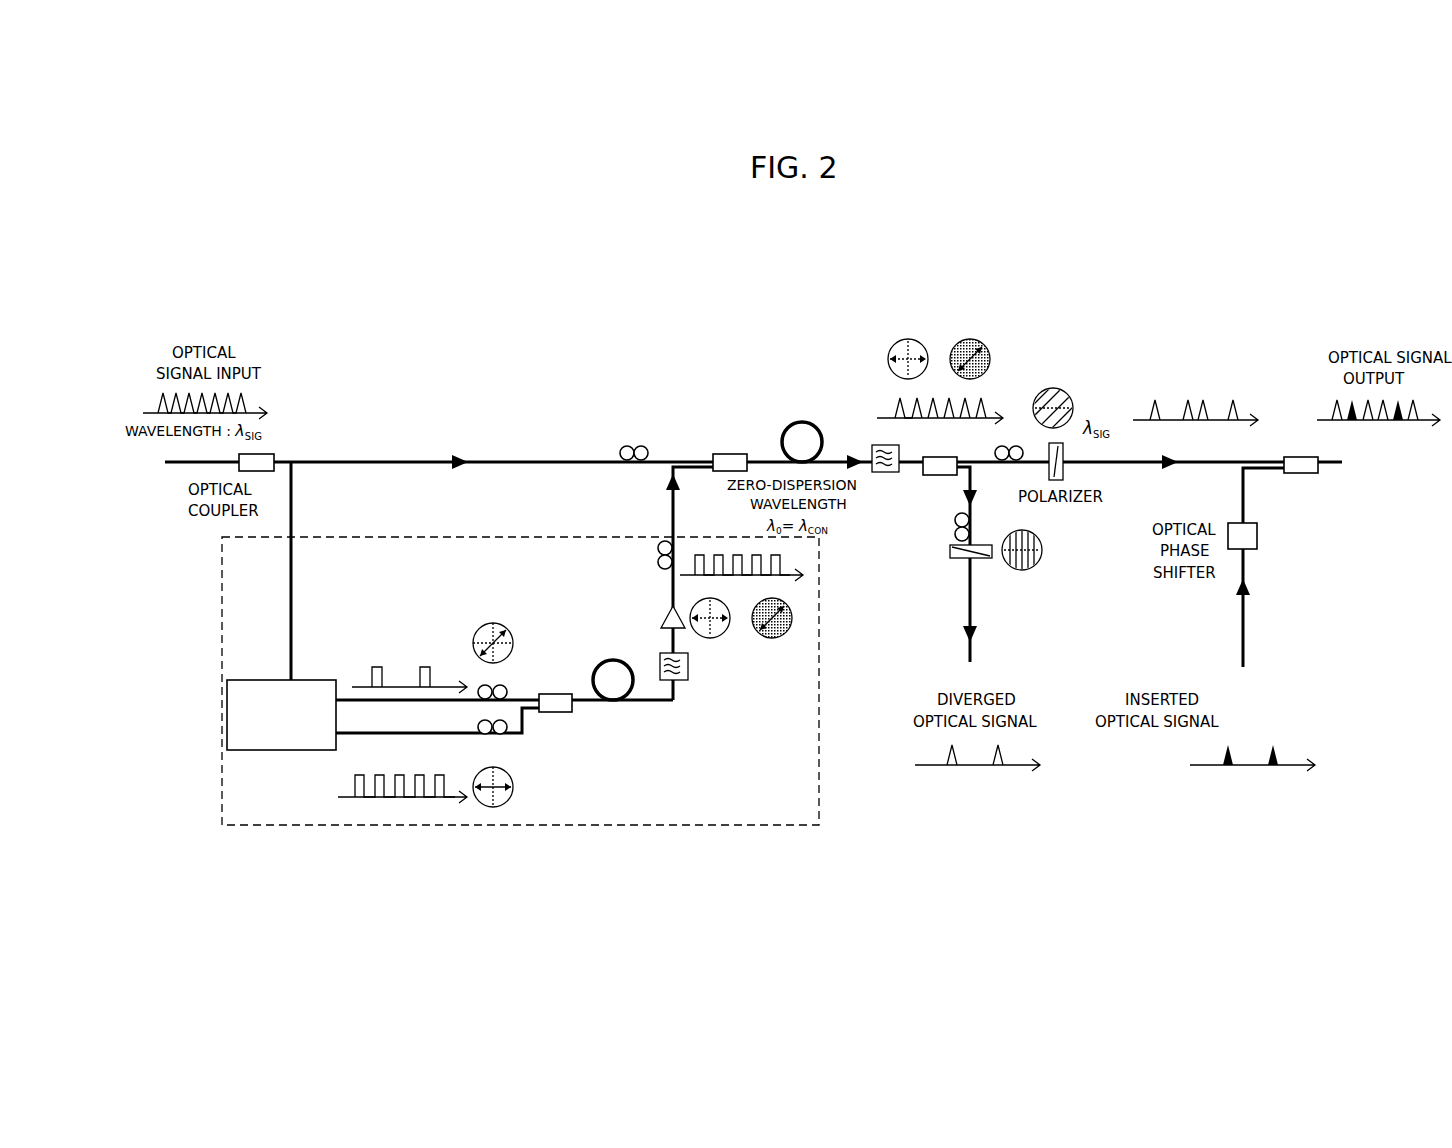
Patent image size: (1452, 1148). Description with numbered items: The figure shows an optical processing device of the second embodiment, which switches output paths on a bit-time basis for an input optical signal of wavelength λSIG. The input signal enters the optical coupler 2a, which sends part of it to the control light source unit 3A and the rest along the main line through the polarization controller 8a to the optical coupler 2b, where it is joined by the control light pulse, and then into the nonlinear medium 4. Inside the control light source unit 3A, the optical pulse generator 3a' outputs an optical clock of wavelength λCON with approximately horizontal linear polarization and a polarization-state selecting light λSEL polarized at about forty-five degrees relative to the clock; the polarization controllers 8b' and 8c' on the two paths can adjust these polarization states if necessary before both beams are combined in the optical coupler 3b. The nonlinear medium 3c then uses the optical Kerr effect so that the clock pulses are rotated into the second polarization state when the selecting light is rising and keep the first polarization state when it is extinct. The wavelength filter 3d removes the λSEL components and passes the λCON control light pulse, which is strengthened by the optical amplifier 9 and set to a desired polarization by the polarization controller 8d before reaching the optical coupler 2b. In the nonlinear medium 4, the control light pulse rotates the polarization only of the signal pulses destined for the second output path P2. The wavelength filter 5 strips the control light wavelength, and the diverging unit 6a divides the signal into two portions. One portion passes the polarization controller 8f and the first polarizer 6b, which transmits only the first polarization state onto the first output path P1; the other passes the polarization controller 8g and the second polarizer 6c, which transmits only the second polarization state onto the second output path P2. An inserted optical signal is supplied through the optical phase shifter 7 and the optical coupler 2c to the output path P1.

The optical coupler 2a is at (278, 452).
The optical coupler 2b is at (730, 452).
The optical coupler 2c is at (1300, 455).
The control light source unit 3A is at (398, 515).
The optical pulse generator 3a' is at (281, 739).
The optical coupler 3b is at (556, 714).
The nonlinear medium 3c is at (592, 686).
The wavelength filter 3d is at (688, 680).
The nonlinear medium 4 is at (798, 422).
The wavelength filter 5 is at (876, 444).
The diverging unit 6a is at (940, 478).
The first polarizer 6b is at (1045, 469).
The second polarizer 6c is at (948, 550).
The optical phase shifter 7 is at (1257, 537).
The polarization controller 8a is at (620, 446).
The polarization controller 8b' is at (493, 631).
The polarization controller 8c' is at (521, 790).
The polarization controller 8d is at (657, 560).
The polarization controller 8f is at (1012, 445).
The polarization controller 8g is at (953, 522).
The optical amplifier 9 is at (665, 612).
The first output path P1 is at (1110, 465).
The second output path P2 is at (972, 600).